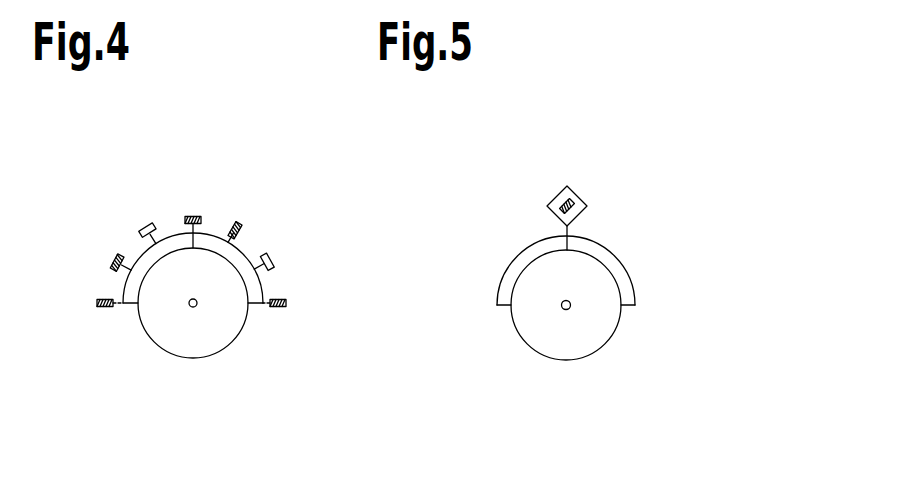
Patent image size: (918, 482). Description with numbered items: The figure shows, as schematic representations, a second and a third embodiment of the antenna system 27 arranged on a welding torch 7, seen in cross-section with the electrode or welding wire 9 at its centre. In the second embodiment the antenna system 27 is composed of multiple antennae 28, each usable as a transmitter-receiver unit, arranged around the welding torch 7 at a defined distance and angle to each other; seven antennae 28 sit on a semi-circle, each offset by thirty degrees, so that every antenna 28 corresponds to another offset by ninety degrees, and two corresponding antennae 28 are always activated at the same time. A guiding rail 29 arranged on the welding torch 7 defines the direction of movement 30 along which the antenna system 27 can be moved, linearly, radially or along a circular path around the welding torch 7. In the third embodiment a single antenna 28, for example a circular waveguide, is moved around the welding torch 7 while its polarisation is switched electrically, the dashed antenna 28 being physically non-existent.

In FIG. 4, the welding torch 7 is at (218, 322).
In FIG. 5, the welding torch 7 is at (590, 322).
In FIG. 4, the welding wire 9 is at (190, 308).
In FIG. 5, the welding wire 9 is at (564, 310).
In FIG. 4, the antenna system 27 is at (300, 220).
In FIG. 5, the antenna system 27 is at (597, 165).
In FIG. 4, the antenna 28 is at (272, 264).
In FIG. 5, the antenna 28 is at (566, 187).
In FIG. 4, the guiding rail 29 is at (140, 255).
In FIG. 5, the guiding rail 29 is at (632, 273).
In FIG. 4, the direction of movement 30 is at (176, 178).
In FIG. 5, the direction of movement 30 is at (586, 187).